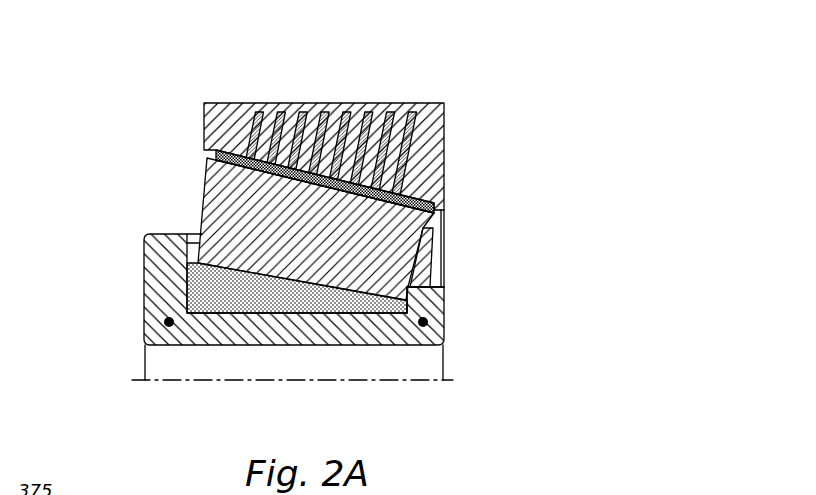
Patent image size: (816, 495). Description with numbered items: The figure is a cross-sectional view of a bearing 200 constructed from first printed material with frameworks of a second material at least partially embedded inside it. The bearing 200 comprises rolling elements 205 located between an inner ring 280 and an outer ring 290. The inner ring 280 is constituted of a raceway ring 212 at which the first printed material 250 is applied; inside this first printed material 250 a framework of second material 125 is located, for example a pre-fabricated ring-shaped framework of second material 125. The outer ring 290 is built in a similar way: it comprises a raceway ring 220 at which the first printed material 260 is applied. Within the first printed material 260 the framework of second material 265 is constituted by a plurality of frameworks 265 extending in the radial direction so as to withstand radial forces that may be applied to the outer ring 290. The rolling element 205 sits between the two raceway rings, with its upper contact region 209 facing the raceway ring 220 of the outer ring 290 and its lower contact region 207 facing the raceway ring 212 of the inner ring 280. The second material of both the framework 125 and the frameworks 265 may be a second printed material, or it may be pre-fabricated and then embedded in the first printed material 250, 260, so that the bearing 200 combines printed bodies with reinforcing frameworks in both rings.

The bearing 200 is at (110, 78).
The outer ring 290 is at (193, 93).
The first printed material 260 is at (423, 152).
The framework of second material 265 is at (378, 111).
The raceway ring 220 is at (398, 193).
The rolling element 205 is at (230, 213).
The first surface 209 is at (403, 213).
The second surface 207 is at (378, 296).
The inner ring 280 is at (130, 230).
The raceway ring 212 is at (228, 297).
The first printed material 250 is at (432, 303).
The framework of second material 125 is at (169, 327).